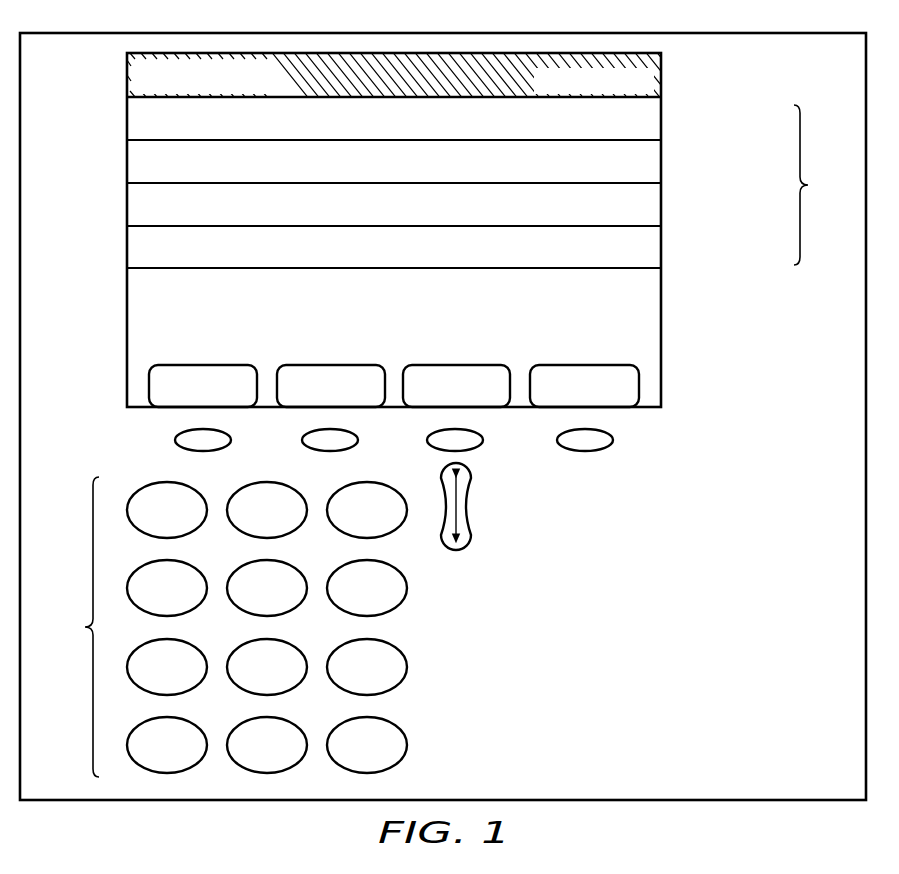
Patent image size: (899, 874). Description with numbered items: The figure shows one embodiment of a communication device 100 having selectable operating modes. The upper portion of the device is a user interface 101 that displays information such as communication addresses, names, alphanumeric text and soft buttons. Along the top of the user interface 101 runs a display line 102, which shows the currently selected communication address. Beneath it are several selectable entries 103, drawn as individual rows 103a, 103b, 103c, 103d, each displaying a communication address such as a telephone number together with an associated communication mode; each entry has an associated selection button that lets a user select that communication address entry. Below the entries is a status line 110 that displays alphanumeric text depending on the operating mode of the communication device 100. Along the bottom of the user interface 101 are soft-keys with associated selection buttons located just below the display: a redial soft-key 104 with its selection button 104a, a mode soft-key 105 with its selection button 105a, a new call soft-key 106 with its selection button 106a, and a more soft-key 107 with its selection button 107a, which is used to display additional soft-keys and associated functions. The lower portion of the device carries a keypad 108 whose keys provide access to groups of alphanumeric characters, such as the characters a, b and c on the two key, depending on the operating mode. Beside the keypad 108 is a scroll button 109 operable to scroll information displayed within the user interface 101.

The communication device 100 is at (208, 800).
The user interface 101 is at (661, 350).
The display line 102 is at (663, 62).
The selectable entries 103 is at (822, 185).
The selectable entry 103a is at (661, 120).
The selectable entry 103b is at (661, 163).
The selectable entry 103c is at (661, 206).
The selectable entry 103d is at (661, 248).
The redial soft-key 104 is at (203, 362).
The selection button 104a is at (175, 440).
The mode soft-key 105 is at (330, 362).
The selection button 105a is at (302, 440).
The new call soft-key 106 is at (455, 362).
The selection button 106a is at (483, 440).
The more soft-key 107 is at (585, 362).
The selection button 107a is at (613, 440).
The keypad 108 is at (226, 627).
The scroll button 109 is at (473, 507).
The status line 110 is at (445, 298).